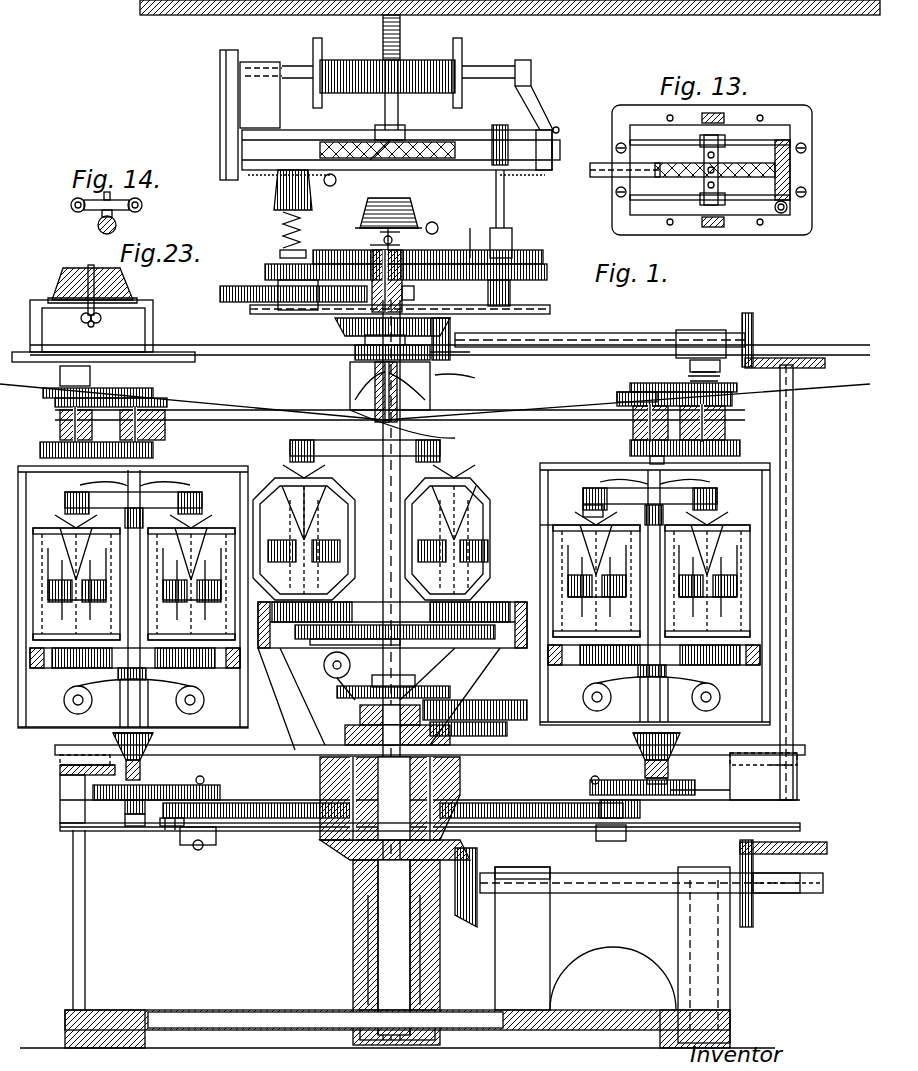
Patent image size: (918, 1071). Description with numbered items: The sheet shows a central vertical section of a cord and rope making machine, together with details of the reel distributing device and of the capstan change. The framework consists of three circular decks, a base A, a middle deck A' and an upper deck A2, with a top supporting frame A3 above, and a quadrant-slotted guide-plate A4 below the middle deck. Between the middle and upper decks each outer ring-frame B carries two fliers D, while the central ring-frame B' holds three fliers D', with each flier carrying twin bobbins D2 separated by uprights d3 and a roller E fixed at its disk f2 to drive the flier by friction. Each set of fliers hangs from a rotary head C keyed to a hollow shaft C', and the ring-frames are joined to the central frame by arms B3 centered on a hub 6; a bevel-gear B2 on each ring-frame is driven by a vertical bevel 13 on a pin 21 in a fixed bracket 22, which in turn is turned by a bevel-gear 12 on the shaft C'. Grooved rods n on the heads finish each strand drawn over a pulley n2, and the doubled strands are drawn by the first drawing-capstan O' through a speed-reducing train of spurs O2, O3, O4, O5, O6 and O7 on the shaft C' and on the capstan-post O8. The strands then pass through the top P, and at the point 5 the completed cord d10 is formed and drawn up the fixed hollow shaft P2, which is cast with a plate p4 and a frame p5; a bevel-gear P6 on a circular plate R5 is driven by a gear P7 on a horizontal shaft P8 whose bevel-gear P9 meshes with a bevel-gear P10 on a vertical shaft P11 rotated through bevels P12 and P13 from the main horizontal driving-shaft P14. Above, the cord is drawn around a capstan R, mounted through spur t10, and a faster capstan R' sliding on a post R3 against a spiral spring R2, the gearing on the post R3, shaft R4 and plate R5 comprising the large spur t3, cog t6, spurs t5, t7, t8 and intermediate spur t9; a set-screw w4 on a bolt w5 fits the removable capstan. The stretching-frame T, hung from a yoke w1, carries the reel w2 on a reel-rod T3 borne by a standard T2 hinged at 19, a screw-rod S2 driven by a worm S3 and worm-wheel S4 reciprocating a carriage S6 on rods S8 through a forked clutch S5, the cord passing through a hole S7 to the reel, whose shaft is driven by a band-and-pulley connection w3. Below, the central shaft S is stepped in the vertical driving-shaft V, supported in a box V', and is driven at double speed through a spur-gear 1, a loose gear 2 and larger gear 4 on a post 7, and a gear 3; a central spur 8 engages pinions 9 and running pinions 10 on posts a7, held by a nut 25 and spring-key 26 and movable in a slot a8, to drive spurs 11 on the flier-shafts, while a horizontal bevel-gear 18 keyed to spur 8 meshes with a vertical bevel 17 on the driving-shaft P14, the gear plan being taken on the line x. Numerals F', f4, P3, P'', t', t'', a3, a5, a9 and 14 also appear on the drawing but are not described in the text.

In FIG. 1, the base deck A is at (397, 939).
In FIG. 1, the middle deck A' is at (53, 785).
In FIG. 1, the upper deck A2 is at (60, 418).
In FIG. 1, the top supporting frame A3 is at (510, 23).
In FIG. 1, the quadrant-slotted guide-plate A4 is at (140, 831).
In FIG. 1, the ring-frame B is at (394, 584).
In FIG. 1, the central ring-frame B' is at (383, 695).
In FIG. 1, the bevel-gear B2 is at (153, 740).
In FIG. 1, the arms B3 is at (430, 742).
In FIG. 1, the rotary head C is at (403, 476).
In FIG. 1, the flier-shaft C' is at (396, 662).
In FIG. 1, the flier D is at (392, 568).
In FIG. 1, the central flier D' is at (375, 532).
In FIG. 1, the twin bobbin D2 is at (568, 575).
In FIG. 1, the uprights d3 is at (790, 522).
In FIG. 1, the completed cord d10 is at (348, 62).
In FIG. 1, the roller E is at (240, 655).
In FIG. 1, the pulley F' is at (429, 676).
In FIG. 1, the disk f2 is at (490, 625).
In FIG. 1, the pulley f4 is at (204, 698).
In FIG. 1, the grooved rod n is at (165, 485).
In FIG. 1, the pulley n2 is at (576, 504).
In FIG. 1, the first drawing-capstan O' is at (676, 370).
In FIG. 1, the spur O2 is at (632, 453).
In FIG. 1, the spur O3 is at (617, 398).
In FIG. 1, the spur O4 is at (690, 366).
In FIG. 1, the spur O5 is at (740, 448).
In FIG. 1, the spur O6 is at (732, 399).
In FIG. 1, the spur O7 is at (737, 387).
In FIG. 1, the capstan-post O8 is at (725, 418).
In FIG. 1, the top P is at (374, 392).
In FIG. 1, the fixed hollow shaft P2 is at (420, 300).
In FIG. 1, the gear P3 is at (355, 352).
In FIG. 1, the plate p4 is at (470, 352).
In FIG. 1, the frame p5 is at (478, 371).
In FIG. 1, the bevel-gear P6 is at (345, 328).
In FIG. 1, the spur-gear P7 is at (450, 330).
In FIG. 1, the horizontal shaft P8 is at (590, 325).
In FIG. 1, the bevel-gear P9 is at (753, 322).
In FIG. 1, the bevel-gear P10 is at (800, 358).
In FIG. 1, the post P'' is at (796, 582).
In FIG. 1, the vertical shaft P11 is at (620, 900).
In FIG. 1, the bevel-gear P12 is at (790, 842).
In FIG. 1, the bevel-gear P13 is at (753, 918).
In FIG. 1, the main horizontal driving-shaft P14 is at (805, 873).
In FIG. 1, the capstan R is at (376, 204).
In FIG. 23, the capstan R is at (83, 285).
In FIG. 1, the capstan R' is at (282, 201).
In FIG. 1, the spiral spring R2 is at (283, 236).
In FIG. 1, the post R3 is at (300, 240).
In FIG. 1, the shaft R4 is at (504, 208).
In FIG. 1, the circular plate R5 is at (250, 309).
In FIG. 1, the central shaft S is at (383, 478).
In FIG. 1, the screw-rod S2 is at (552, 150).
In FIG. 13, the screw-rod S2 is at (621, 183).
In FIG. 14, the screw-rod S2 is at (107, 234).
In FIG. 1, the worm S3 is at (500, 125).
In FIG. 13, the worm S3 is at (781, 213).
In FIG. 13, the worm-wheel S4 is at (785, 135).
In FIG. 1, the forked clutch S5 is at (400, 140).
In FIG. 14, the forked clutch S5 is at (100, 230).
In FIG. 1, the reciprocating carriage S6 is at (378, 140).
In FIG. 13, the reciprocating carriage S6 is at (715, 161).
In FIG. 14, the reciprocating carriage S6 is at (71, 203).
In FIG. 13, the hole S7 is at (712, 190).
In FIG. 14, the hole S7 is at (118, 210).
In FIG. 13, the rods S8 is at (650, 140).
In FIG. 14, the rods S8 is at (142, 203).
In FIG. 1, the stretching-frame T is at (552, 122).
In FIG. 13, the stretching-frame T is at (612, 122).
In FIG. 1, the standard T2 is at (548, 112).
In FIG. 1, the reel-rod T3 is at (282, 72).
In FIG. 1, the gear t' is at (395, 250).
In FIG. 1, the pulley t'' is at (450, 217).
In FIG. 1, the large spur t3 is at (220, 294).
In FIG. 1, the spur t5 is at (510, 293).
In FIG. 1, the cog t6 is at (402, 292).
In FIG. 1, the spur t7 is at (265, 272).
In FIG. 1, the spur t8 is at (512, 243).
In FIG. 1, the intermediate spur t9 is at (474, 242).
In FIG. 1, the spur t10 is at (361, 243).
In FIG. 1, the vertical driving-shaft V is at (370, 952).
In FIG. 1, the box V' is at (371, 950).
In FIG. 1, the yoke w1 is at (400, 40).
In FIG. 1, the reel w2 is at (480, 70).
In FIG. 1, the band-and-pulley connection w3 is at (220, 112).
In FIG. 1, the set-screw w4 is at (410, 228).
In FIG. 23, the set-screw w4 is at (100, 320).
In FIG. 1, the bolt w5 is at (365, 243).
In FIG. 23, the bolt w5 is at (133, 285).
In FIG. 1, the spindle a3 is at (300, 500).
In FIG. 1, the bearing a5 is at (205, 845).
In FIG. 1, the post a7 is at (575, 873).
In FIG. 1, the slot a8 is at (435, 389).
In FIG. 1, the cord a9 is at (410, 429).
In FIG. 1, the section line x is at (789, 757).
In FIG. 1, the spur-gear 1 is at (345, 735).
In FIG. 1, the spur-gear 2 is at (507, 729).
In FIG. 1, the spur-gear 3 is at (360, 714).
In FIG. 1, the gear 4 is at (505, 700).
In FIG. 1, the cord forming point 5 is at (376, 386).
In FIG. 1, the hub 6 is at (353, 785).
In FIG. 1, the post 7 is at (470, 705).
In FIG. 1, the central spur 8 is at (430, 803).
In FIG. 1, the pinion 9 is at (640, 810).
In FIG. 1, the pinion 10 is at (205, 790).
In FIG. 1, the spur 11 is at (735, 784).
In FIG. 1, the bevel-gear 12 is at (396, 794).
In FIG. 1, the vertical bevel 13 is at (113, 740).
In FIG. 1, the bar 14 is at (540, 525).
In FIG. 1, the vertical bevel 17 is at (477, 860).
In FIG. 1, the horizontal bevel-gear 18 is at (320, 850).
In FIG. 1, the hinge 19 is at (558, 132).
In FIG. 1, the pin 21 is at (428, 763).
In FIG. 1, the fixed bracket 22 is at (73, 774).
In FIG. 1, the nut 25 is at (522, 928).
In FIG. 1, the spring-key 26 is at (196, 780).